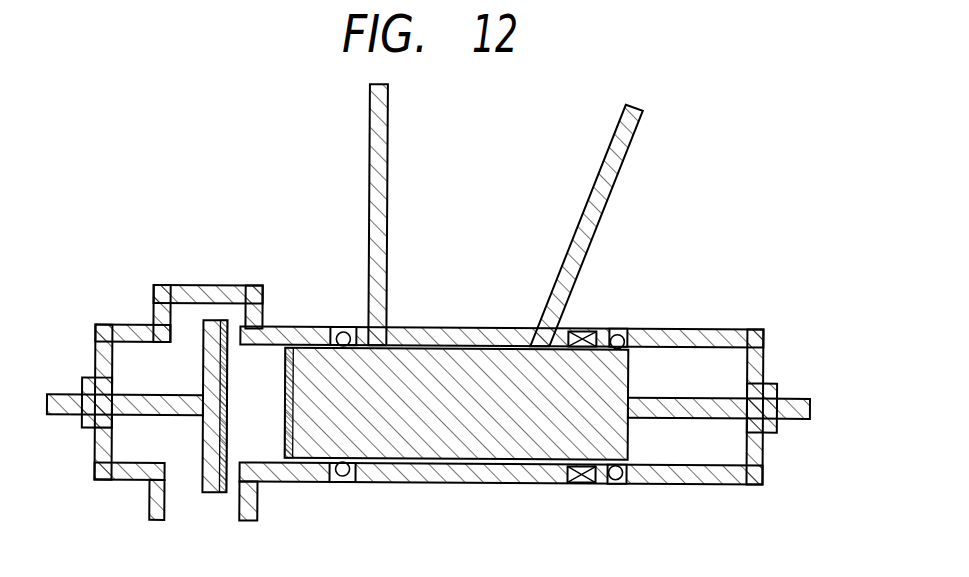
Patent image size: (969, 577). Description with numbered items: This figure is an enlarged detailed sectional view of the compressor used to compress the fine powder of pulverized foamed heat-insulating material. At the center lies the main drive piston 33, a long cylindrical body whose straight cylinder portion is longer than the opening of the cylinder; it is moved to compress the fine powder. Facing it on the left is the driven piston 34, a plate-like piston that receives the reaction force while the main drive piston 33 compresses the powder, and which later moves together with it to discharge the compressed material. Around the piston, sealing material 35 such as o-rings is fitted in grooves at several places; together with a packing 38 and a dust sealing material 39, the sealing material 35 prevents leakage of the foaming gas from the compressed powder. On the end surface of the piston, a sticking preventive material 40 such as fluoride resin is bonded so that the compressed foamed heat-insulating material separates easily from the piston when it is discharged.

The main drive piston 33 is at (457, 349).
The driven piston 34 is at (203, 343).
The sealing material 35 is at (343, 333).
The packing 38 is at (243, 327).
The dust sealing material 39 is at (578, 483).
The sticking preventive material 40 is at (228, 378).